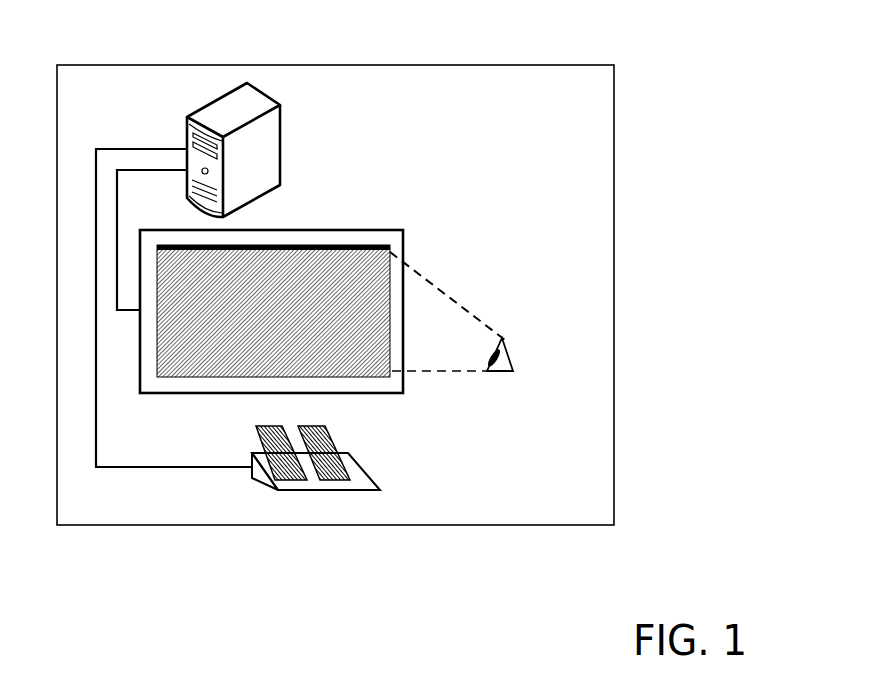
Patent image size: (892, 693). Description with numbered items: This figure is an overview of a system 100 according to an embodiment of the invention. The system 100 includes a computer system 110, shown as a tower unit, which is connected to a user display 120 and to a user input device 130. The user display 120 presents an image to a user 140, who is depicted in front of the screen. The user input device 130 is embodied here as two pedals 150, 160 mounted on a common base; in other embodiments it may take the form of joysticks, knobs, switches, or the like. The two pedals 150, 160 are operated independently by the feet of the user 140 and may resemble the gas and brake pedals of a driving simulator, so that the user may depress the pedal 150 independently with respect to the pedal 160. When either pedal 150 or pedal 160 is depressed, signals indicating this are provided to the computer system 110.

The system 100 is at (483, 100).
The computer system 110 is at (227, 110).
The user display 120 is at (405, 252).
The user input device 130 is at (322, 482).
The user 140 is at (520, 357).
The pedal 150 is at (327, 439).
The pedal 160 is at (278, 426).